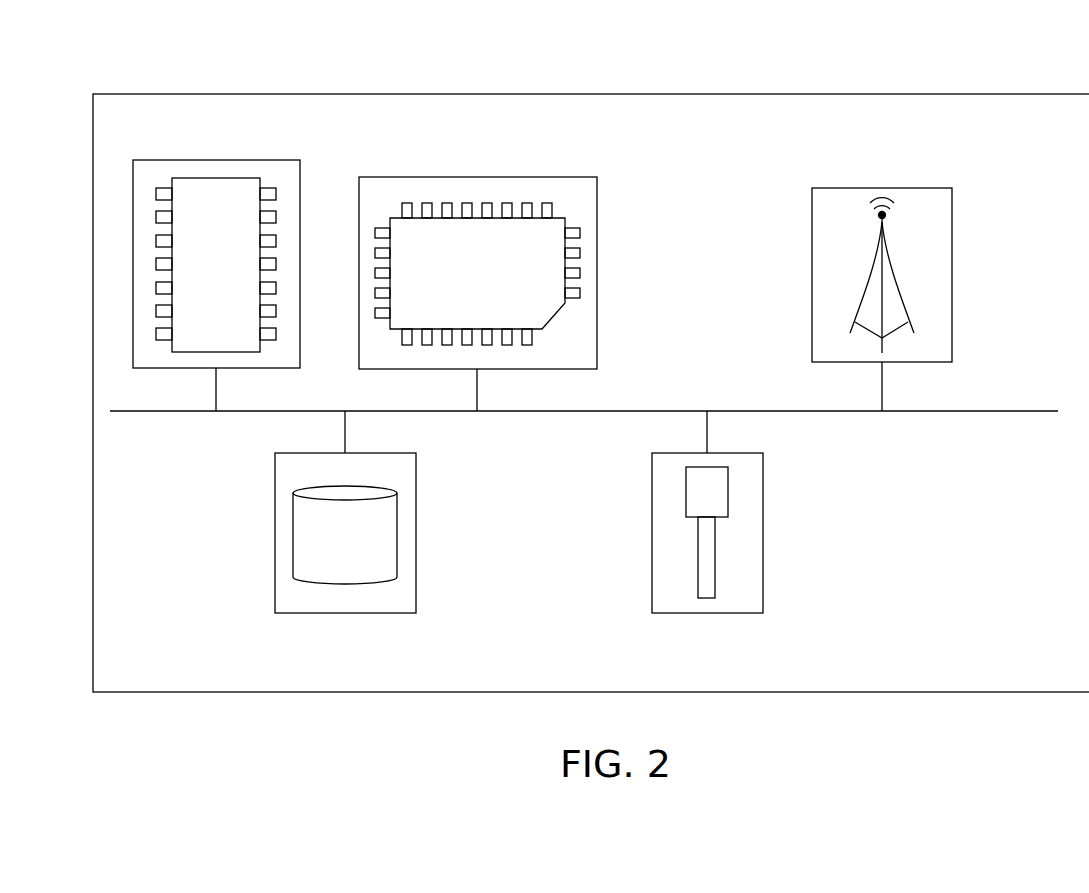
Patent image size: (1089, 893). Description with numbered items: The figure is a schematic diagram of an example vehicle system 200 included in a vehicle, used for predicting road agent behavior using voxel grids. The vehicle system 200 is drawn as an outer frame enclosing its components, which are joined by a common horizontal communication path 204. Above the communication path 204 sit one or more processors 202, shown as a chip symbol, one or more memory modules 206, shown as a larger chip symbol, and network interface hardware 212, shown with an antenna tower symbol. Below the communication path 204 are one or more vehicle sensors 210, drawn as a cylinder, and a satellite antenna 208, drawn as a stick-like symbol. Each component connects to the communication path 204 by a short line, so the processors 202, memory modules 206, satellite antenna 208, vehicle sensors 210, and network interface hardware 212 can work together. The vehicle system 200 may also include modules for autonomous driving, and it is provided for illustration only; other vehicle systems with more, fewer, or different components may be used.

The vehicle system 200 is at (966, 93).
The processors 202 is at (218, 160).
The communication path 204 is at (988, 411).
The memory modules 206 is at (478, 177).
The satellite antenna 208 is at (707, 613).
The vehicle sensors 210 is at (345, 613).
The network interface hardware 212 is at (886, 188).